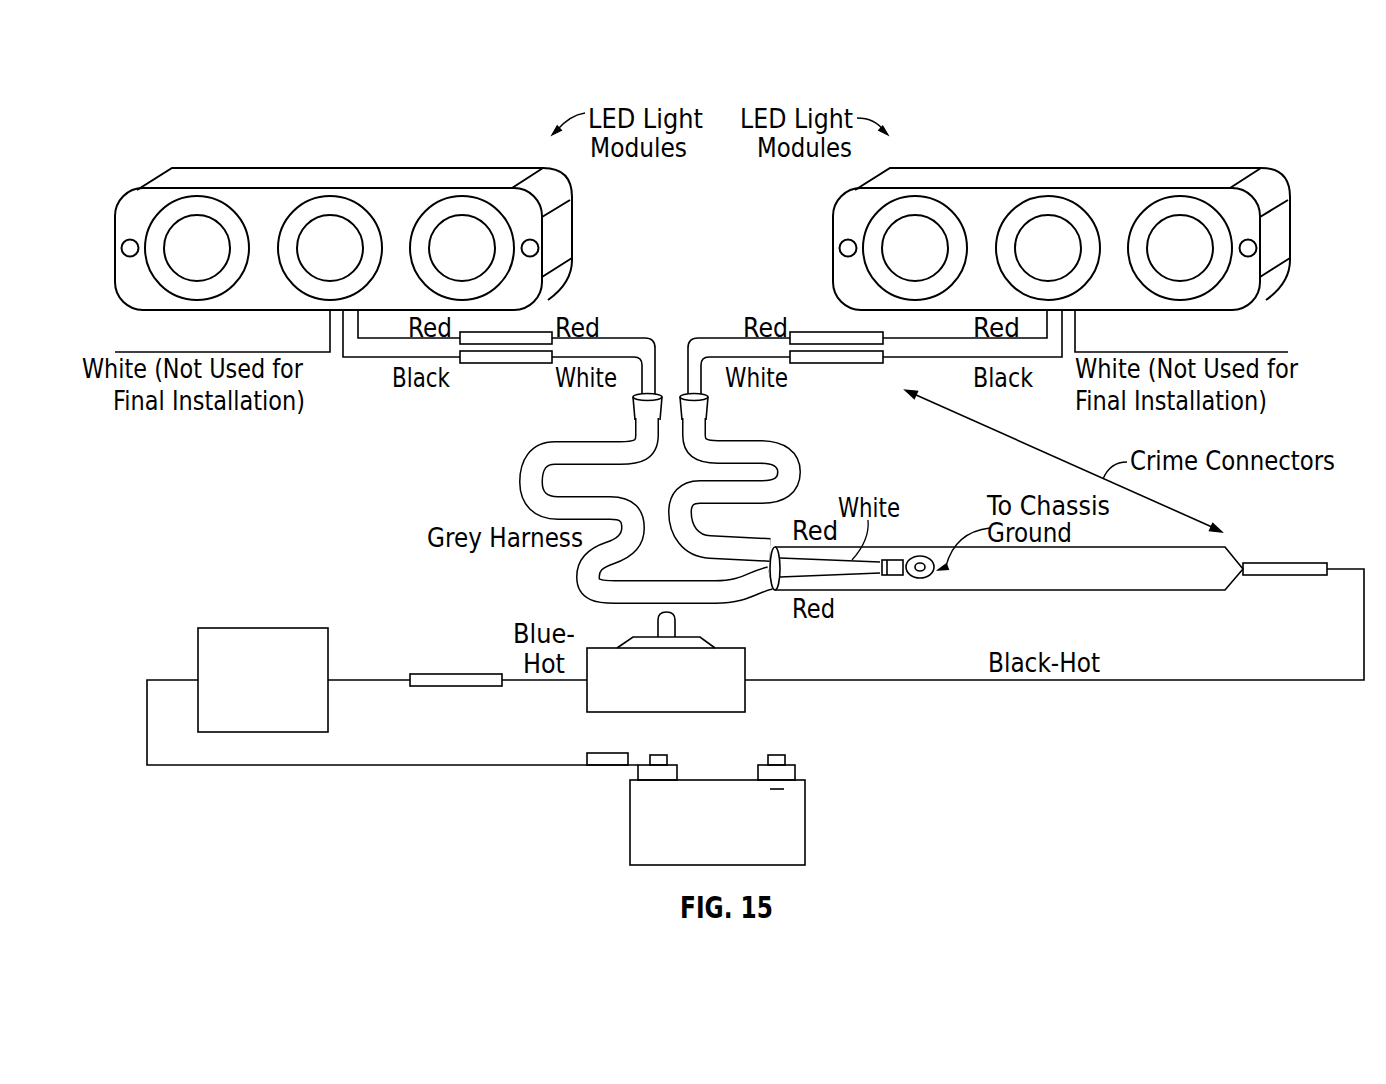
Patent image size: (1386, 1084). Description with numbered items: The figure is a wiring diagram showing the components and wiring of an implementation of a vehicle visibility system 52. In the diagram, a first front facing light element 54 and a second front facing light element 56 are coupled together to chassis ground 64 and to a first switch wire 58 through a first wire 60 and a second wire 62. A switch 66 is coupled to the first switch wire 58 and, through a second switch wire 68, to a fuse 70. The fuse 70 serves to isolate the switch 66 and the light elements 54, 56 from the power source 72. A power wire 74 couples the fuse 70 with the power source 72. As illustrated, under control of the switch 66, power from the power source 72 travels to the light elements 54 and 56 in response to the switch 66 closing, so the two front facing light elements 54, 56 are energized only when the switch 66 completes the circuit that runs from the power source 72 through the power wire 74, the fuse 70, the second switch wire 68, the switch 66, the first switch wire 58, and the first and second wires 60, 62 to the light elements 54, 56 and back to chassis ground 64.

The vehicle visibility system 52 is at (1212, 134).
The first front facing light element 54 is at (262, 168).
The second front facing light element 56 is at (1278, 240).
The first switch wire 58 is at (1200, 682).
The first wire 60 is at (523, 478).
The second wire 62 is at (786, 468).
The chassis ground 64 is at (922, 556).
The switch 66 is at (730, 650).
The second switch wire 68 is at (540, 683).
The fuse 70 is at (263, 628).
The power source 72 is at (807, 820).
The power wire 74 is at (447, 765).